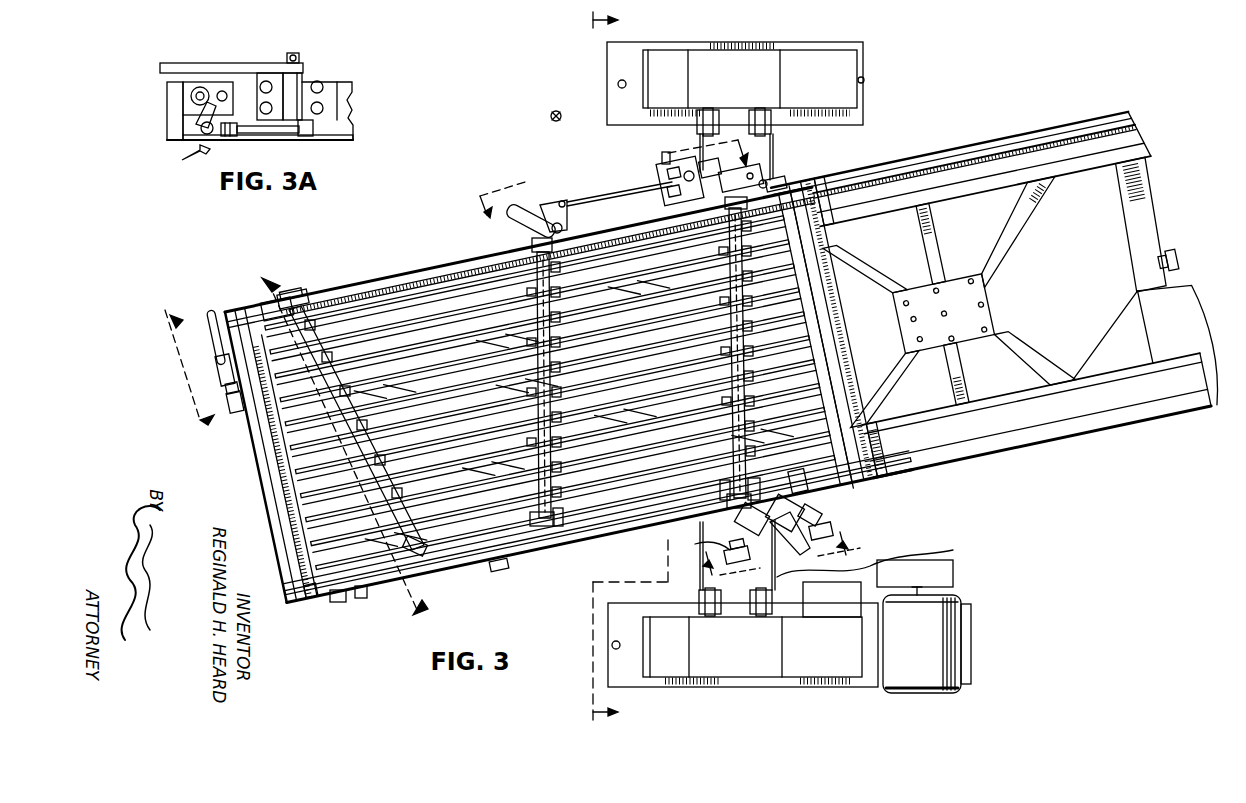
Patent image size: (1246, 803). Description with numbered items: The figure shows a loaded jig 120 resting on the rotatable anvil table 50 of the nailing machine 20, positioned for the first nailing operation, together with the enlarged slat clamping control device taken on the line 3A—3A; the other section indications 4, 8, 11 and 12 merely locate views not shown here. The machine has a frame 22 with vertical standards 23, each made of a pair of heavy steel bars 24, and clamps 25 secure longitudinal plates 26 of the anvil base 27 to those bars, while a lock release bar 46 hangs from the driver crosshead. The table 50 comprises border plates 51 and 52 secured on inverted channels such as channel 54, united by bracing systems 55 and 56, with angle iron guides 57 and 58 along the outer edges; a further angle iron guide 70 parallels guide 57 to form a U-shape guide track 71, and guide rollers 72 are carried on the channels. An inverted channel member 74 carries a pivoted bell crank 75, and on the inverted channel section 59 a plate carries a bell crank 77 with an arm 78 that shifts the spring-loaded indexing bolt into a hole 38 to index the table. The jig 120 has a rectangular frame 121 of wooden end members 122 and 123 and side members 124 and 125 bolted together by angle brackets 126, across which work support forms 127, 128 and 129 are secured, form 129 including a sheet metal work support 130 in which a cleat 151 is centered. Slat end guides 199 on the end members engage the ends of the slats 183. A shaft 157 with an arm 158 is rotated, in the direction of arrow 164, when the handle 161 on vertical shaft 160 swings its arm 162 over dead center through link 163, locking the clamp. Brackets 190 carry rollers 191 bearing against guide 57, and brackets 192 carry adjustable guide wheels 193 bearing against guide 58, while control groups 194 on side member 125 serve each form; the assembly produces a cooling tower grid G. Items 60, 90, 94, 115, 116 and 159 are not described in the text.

In FIG. 3, the section line 4- 4 is at (780, 544).
In FIG. 3, the section line 8- 8 is at (344, 445).
In FIG. 3, the section line 11- 11 is at (609, 365).
In FIG. 3, the section line 12- 12 is at (607, 180).
In FIG. 3, the section line 3A- 3A is at (175, 368).
In FIG. 3, the nailing machine 20 is at (893, 50).
In FIG. 3, the frame 22 is at (818, 42).
In FIG. 3, the vertical standards 23 is at (735, 57).
In FIG. 3, the heavy steel bars 24 is at (712, 112).
In FIG. 3, the clamps 25 is at (774, 136).
In FIG. 3, the longitudinal plates 26 is at (720, 165).
In FIG. 3, the anvil base 27 is at (770, 182).
In FIG. 3, the hole 38 is at (786, 182).
In FIG. 3, the lock release bar 46 is at (760, 560).
In FIG. 3, the rotatable anvil table 50 is at (1104, 108).
In FIG. 3, the border plate 51 is at (1140, 150).
In FIG. 3, the border plate 52 is at (1190, 376).
In FIG. 3, the inverted channel 54 is at (1150, 196).
In FIG. 3, the bracing system 55 is at (490, 414).
In FIG. 3, the bracing system 56 is at (990, 312).
In FIG. 3, the angle iron guide 57 is at (342, 286).
In FIG. 3, the angle iron guide 58 is at (1040, 446).
In FIG. 3, the inverted channel section 59 is at (662, 170).
In FIG. 3, the coupling 60 is at (800, 515).
In FIG. 3, the angle iron guide 70 is at (978, 164).
In FIG. 3, the U-shape guide track 71 is at (980, 160).
In FIG. 3, the guide rollers 72 is at (1176, 258).
In FIG. 3, the inverted channel member 74 is at (548, 205).
In FIG. 3, the bell crank 75 is at (526, 216).
In FIG. 3, the bell crank 77 is at (664, 150).
In FIG. 3, the arm 78 is at (660, 186).
In FIG. 3, the drive linkage 90 is at (858, 528).
In FIG. 3, the guard 94 is at (830, 545).
In FIG. 3, the link 115 is at (711, 545).
In FIG. 3, the crank arm 116 is at (835, 525).
In FIG. 3, the jig 120 is at (836, 248).
In FIG. 3, the rectangular frame 121 is at (828, 304).
In FIG. 3A, the end member 122 is at (352, 85).
In FIG. 3, the end member 122 is at (262, 450).
In FIG. 3, the end member 123 is at (842, 327).
In FIG. 3A, the side member 124 is at (170, 137).
In FIG. 3, the side member 124 is at (410, 280).
In FIG. 3, the side member 125 is at (498, 560).
In FIG. 3, the angle brackets 126 is at (816, 206).
In FIG. 3, the work support form 127 is at (727, 488).
In FIG. 3, the work support form 128 is at (535, 518).
In FIG. 3, the work support form 129 is at (400, 545).
In FIG. 3, the sheet metal work support 130 is at (528, 522).
In FIG. 3, the cleat 151 is at (420, 378).
In FIG. 3A, the shaft 157 is at (192, 95).
In FIG. 3, the shaft 157 is at (265, 304).
In FIG. 3A, the arm 158 is at (196, 118).
In FIG. 3A, the latch plate 159 is at (303, 80).
In FIG. 3, the latch plate 159 is at (238, 404).
In FIG. 3A, the vertical shaft 160 is at (293, 53).
In FIG. 3A, the handle 161 is at (212, 63).
In FIG. 3, the handle 161 is at (214, 340).
In FIG. 3A, the arm 162 is at (313, 128).
In FIG. 3, the arm 162 is at (228, 390).
In FIG. 3A, the link 163 is at (270, 133).
In FIG. 3, the link 163 is at (222, 370).
In FIG. 3A, the arrow 164 is at (188, 158).
In FIG. 3, the slats 183 is at (305, 528).
In FIG. 3, the brackets 190 is at (302, 296).
In FIG. 3, the rollers 191 is at (291, 292).
In FIG. 3, the brackets 192 is at (800, 472).
In FIG. 3, the guide wheels 193 is at (762, 492).
In FIG. 3, the control groups 194 is at (366, 600).
In FIG. 3, the slat end guides 199 is at (274, 476).
In FIG. 3, the cooling tower grid G is at (622, 490).